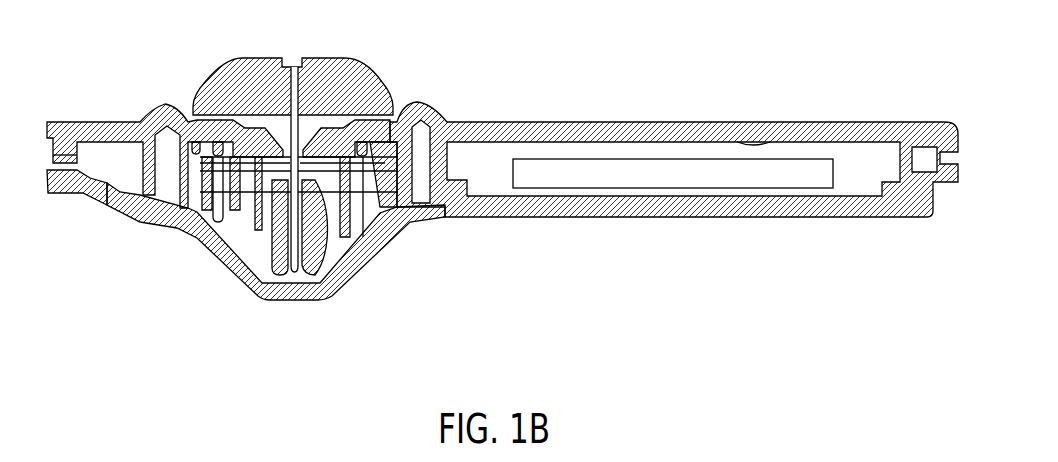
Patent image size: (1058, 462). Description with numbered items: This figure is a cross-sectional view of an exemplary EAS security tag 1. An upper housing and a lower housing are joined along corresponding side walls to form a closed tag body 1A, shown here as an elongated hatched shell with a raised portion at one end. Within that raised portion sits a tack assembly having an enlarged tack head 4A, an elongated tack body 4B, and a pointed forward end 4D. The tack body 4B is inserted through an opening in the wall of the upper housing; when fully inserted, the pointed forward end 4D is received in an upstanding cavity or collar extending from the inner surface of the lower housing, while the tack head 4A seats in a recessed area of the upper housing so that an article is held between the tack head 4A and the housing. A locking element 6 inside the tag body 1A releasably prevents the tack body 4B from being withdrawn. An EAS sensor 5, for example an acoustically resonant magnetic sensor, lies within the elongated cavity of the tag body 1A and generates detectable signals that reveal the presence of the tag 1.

The EAS security tag 1 is at (907, 87).
The tag body 1A is at (804, 227).
The tack head 4A is at (258, 53).
The tack body 4B is at (333, 282).
The pointed forward end 4D is at (293, 272).
The EAS sensor 5 is at (669, 180).
The locking element 6 is at (357, 170).